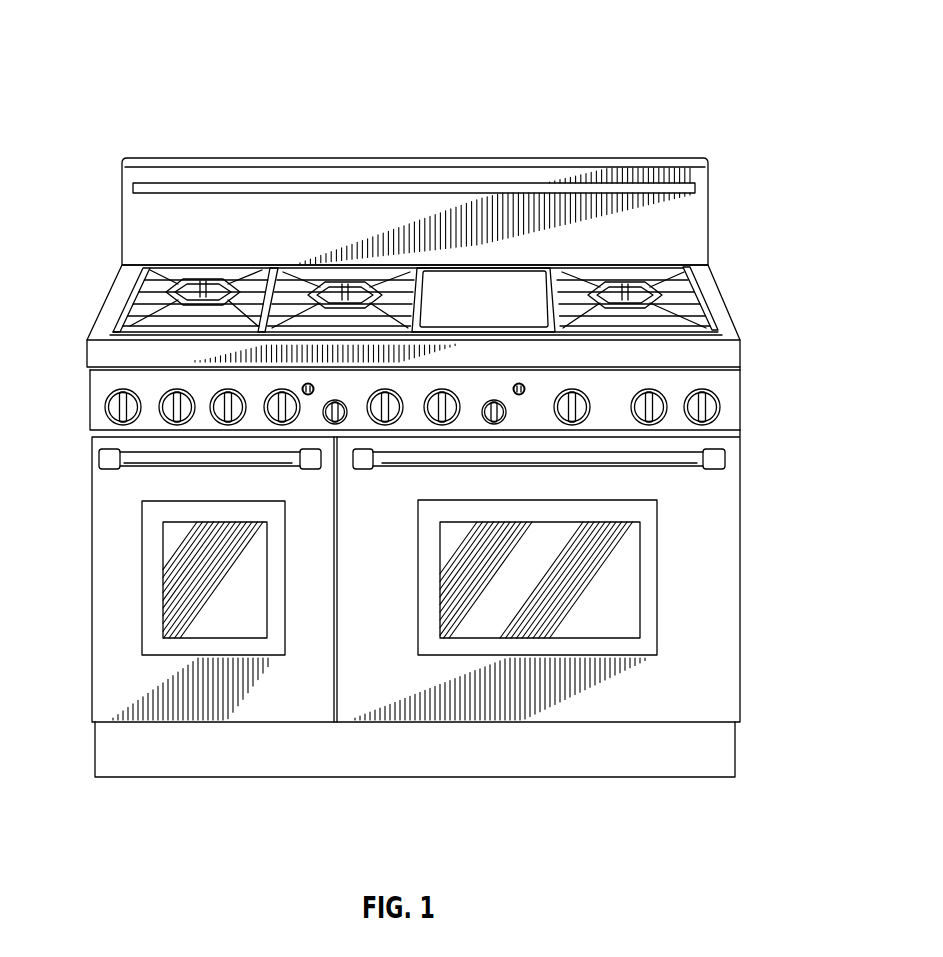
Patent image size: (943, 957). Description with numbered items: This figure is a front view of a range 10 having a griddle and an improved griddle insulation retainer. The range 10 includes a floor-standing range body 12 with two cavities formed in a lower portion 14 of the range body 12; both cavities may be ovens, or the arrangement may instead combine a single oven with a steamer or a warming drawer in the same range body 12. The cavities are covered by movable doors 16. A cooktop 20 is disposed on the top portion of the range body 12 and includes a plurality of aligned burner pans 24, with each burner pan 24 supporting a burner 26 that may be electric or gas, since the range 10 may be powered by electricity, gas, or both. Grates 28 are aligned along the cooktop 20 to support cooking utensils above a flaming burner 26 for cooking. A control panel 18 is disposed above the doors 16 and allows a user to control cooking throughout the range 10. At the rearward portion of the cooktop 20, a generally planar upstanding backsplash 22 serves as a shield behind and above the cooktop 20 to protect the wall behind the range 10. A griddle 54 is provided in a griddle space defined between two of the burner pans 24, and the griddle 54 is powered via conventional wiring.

The range 10 is at (247, 132).
The range body 12 is at (68, 564).
The lower portion 14 is at (742, 560).
The door 16 is at (707, 690).
The control panel 18 is at (742, 400).
The cooktop 20 is at (703, 283).
The backsplash 22 is at (680, 218).
The burner pan 24 is at (128, 305).
The burner 26 is at (362, 296).
The grate 28 is at (182, 287).
The griddle 54 is at (507, 308).